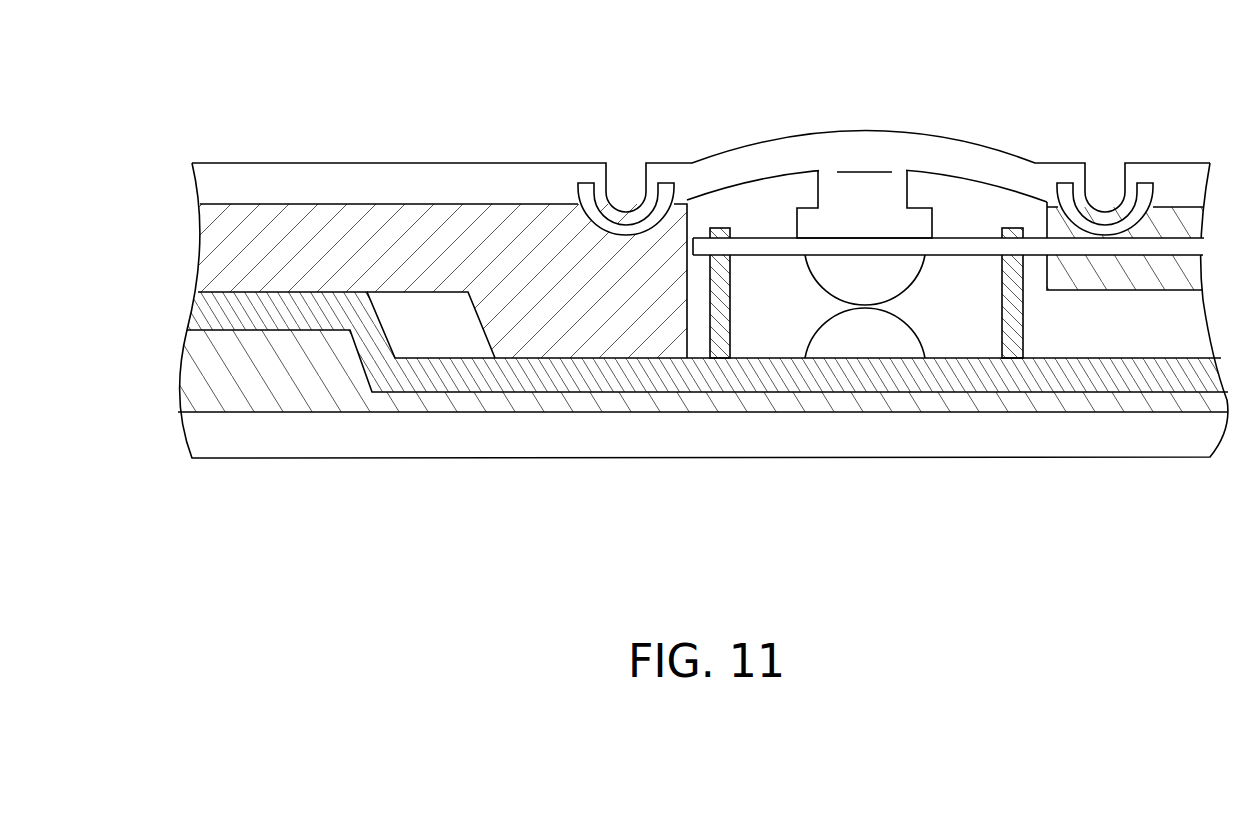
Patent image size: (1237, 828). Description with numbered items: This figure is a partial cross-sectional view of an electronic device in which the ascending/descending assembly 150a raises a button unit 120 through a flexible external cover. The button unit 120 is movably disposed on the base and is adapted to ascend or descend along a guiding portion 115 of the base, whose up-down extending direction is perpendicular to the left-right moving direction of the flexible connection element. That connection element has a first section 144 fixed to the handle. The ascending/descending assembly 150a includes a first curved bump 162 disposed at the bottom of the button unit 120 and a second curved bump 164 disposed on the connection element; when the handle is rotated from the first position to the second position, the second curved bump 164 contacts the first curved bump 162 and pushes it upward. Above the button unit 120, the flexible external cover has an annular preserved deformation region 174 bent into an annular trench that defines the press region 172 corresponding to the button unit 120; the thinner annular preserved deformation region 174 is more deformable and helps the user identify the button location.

The annular preserved deformation region 174 is at (631, 163).
The press region 172 is at (787, 157).
The button unit 120 is at (867, 190).
The first section 144 is at (588, 375).
The guiding portion 115 is at (720, 340).
The second curved bump 164 is at (859, 345).
The first curved bump 162 is at (897, 282).
The ascending/descending assembly 150a is at (879, 410).